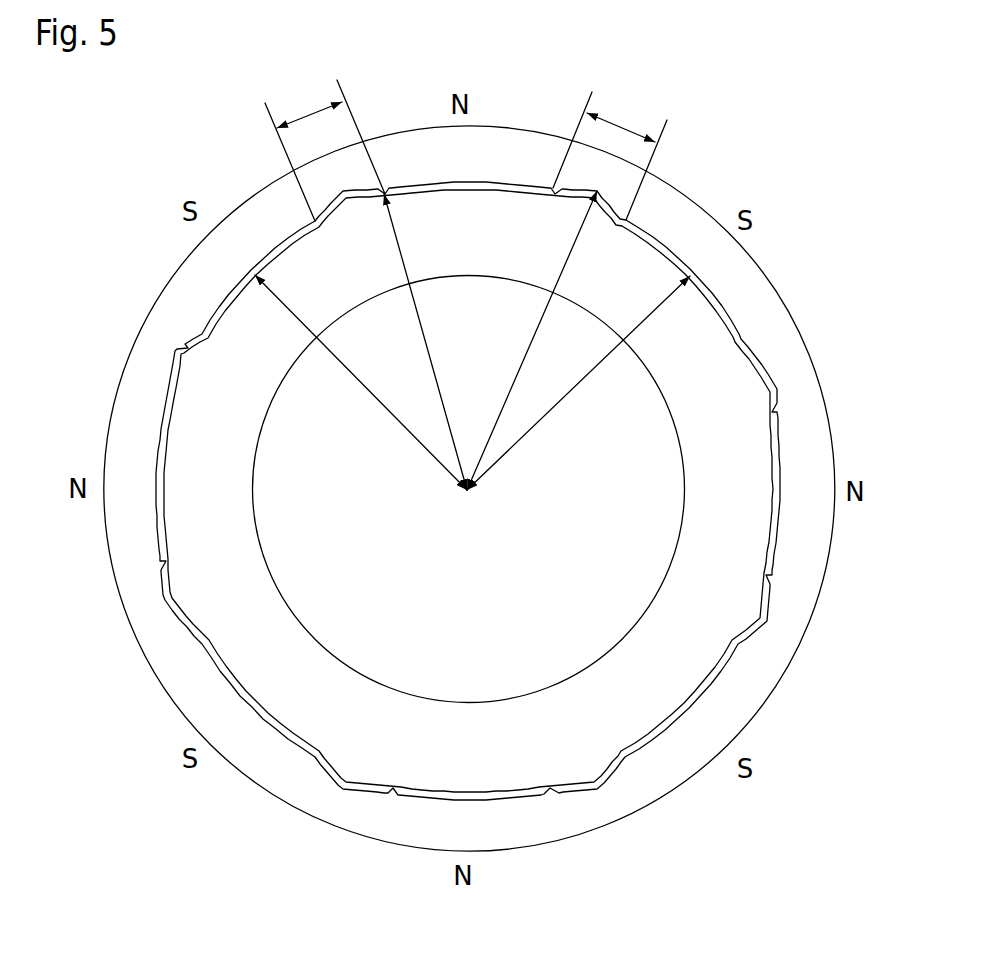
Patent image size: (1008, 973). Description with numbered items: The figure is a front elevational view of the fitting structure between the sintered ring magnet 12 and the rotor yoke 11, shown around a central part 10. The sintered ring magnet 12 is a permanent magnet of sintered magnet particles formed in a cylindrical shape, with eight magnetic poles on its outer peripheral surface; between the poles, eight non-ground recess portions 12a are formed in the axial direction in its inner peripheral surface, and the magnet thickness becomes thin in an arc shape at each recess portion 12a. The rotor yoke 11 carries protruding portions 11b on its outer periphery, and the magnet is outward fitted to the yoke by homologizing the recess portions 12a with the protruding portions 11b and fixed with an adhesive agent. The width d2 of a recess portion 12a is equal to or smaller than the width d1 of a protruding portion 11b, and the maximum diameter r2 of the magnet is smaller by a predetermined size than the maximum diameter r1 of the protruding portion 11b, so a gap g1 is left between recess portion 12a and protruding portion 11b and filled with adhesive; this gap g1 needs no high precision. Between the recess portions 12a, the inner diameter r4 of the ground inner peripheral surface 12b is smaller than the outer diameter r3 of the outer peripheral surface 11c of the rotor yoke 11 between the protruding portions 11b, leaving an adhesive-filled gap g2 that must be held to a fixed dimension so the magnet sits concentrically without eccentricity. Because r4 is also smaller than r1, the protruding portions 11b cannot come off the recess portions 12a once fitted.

The rotor 10 is at (451, 590).
The rotor yoke 11 is at (408, 737).
The protruding portion 11b is at (384, 200).
The outer peripheral surface 11c is at (465, 190).
The sintered ring magnet 12 is at (523, 851).
The recess portion 12a is at (380, 186).
The inner peripheral surface 12b is at (468, 182).
The gap g1 is at (348, 206).
The gap g2 is at (552, 197).
The width of the protruding portion d1 is at (325, 150).
The width of the recess portion d2 is at (610, 156).
The maximum diameter of the protruding portion r1 is at (425, 342).
The maximum diameter of the magnet r2 is at (532, 340).
The outer diameter of the outer peripheral surface r3 is at (361, 382).
The inner diameter of the inner peripheral surface r4 is at (578, 383).